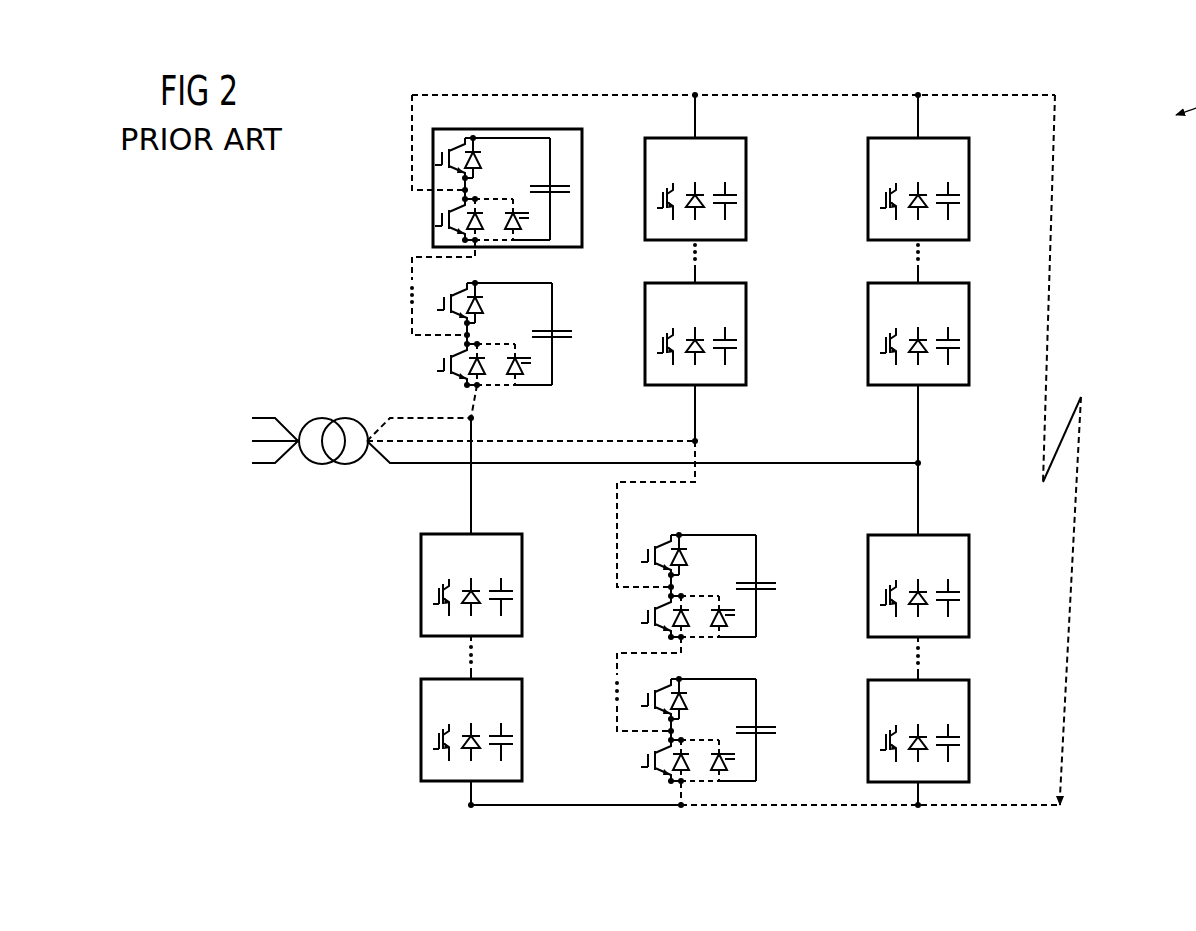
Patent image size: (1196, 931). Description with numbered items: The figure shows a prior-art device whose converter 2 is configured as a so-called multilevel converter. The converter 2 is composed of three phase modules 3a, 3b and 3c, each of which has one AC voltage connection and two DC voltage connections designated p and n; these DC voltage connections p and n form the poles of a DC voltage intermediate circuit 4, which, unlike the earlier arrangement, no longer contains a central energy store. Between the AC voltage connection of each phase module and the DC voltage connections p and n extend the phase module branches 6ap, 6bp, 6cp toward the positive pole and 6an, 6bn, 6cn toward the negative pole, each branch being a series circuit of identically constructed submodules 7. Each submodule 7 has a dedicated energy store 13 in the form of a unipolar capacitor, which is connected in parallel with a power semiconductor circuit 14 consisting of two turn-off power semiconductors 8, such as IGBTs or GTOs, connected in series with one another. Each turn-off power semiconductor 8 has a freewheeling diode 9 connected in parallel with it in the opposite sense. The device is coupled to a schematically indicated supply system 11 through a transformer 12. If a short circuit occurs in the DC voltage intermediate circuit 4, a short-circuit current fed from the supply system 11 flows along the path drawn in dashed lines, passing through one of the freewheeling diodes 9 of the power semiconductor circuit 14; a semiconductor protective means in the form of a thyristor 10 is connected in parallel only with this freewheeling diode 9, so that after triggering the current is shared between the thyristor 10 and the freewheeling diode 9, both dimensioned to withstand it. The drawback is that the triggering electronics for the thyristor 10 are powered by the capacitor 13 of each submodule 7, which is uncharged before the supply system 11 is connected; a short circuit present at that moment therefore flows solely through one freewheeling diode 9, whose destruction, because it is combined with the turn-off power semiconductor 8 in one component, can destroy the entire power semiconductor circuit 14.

The converter 2 is at (548, 91).
The phase module 3a is at (400, 127).
The phase module 3b is at (624, 91).
The phase module 3c is at (850, 91).
The DC voltage intermediate circuit 4 is at (1069, 98).
The phase module branch 6ap is at (400, 302).
The phase module branch 6an is at (536, 572).
The phase module branch 6bp is at (745, 395).
The phase module branch 6bn is at (776, 570).
The phase module branch 6cp is at (955, 402).
The phase module branch 6cn is at (989, 726).
The submodule 7 is at (512, 397).
The turn-off power semiconductor 8 is at (440, 128).
The freewheeling diode 9 is at (495, 150).
The thyristor 10 is at (530, 222).
The supply system 11 is at (256, 479).
The transformer 12 is at (328, 479).
The energy store 13 is at (560, 193).
The power semiconductor circuit 14 is at (400, 143).
The DC voltage connection p is at (412, 95).
The DC voltage connection n is at (471, 808).